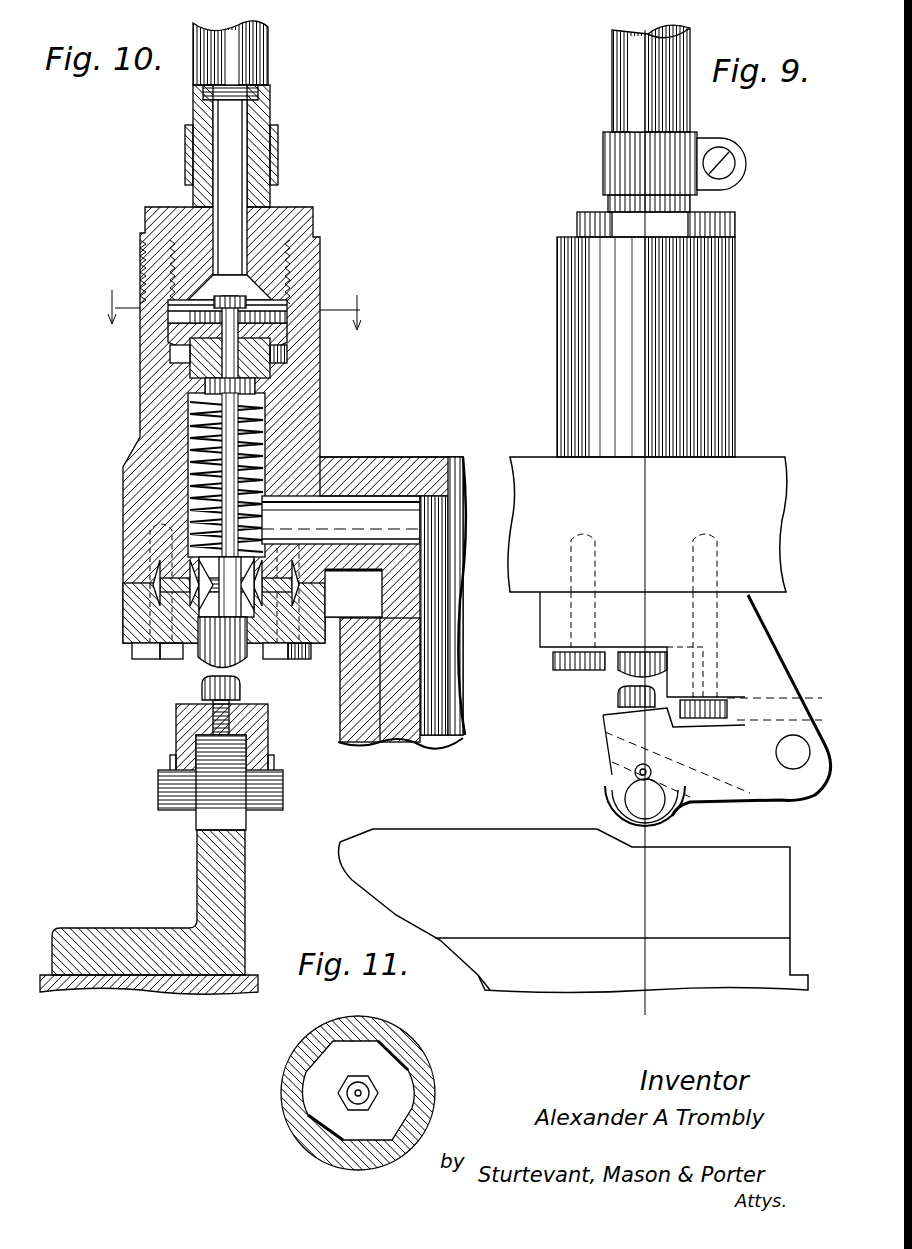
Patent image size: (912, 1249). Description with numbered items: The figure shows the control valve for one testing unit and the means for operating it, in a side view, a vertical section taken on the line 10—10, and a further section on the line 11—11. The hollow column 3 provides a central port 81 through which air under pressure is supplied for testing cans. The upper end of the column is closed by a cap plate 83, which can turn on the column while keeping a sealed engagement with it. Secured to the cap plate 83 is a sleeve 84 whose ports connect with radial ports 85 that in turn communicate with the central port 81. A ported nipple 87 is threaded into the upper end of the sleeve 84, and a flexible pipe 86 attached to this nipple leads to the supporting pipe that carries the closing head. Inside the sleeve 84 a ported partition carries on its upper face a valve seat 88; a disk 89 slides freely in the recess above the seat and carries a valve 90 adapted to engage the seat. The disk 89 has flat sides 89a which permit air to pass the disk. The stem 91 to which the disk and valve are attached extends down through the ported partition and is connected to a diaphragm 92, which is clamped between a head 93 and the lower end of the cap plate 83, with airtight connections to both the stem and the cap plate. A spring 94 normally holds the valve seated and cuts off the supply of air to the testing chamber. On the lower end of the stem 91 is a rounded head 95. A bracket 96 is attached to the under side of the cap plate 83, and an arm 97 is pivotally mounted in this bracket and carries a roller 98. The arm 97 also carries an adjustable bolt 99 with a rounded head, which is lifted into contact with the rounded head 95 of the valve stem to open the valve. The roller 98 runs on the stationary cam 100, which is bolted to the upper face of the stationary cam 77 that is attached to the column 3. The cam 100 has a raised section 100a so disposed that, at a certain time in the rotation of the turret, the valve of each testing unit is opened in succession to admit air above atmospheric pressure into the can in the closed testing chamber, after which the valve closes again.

In FIG. 10, the column 3 is at (440, 673).
In FIG. 9, the section line 10— 10 is at (648, 523).
In FIG. 10, the section line 11— 11 is at (238, 310).
In FIG. 10, the stationary cam 77 is at (145, 983).
In FIG. 9, the stationary cam 77 is at (713, 990).
In FIG. 10, the port 81 is at (458, 625).
In FIG. 10, the cap plate 83 is at (432, 470).
In FIG. 9, the cap plate 83 is at (760, 470).
In FIG. 10, the sleeve 84 is at (305, 270).
In FIG. 9, the sleeve 84 is at (712, 305).
In FIG. 11, the sleeve 84 is at (433, 1099).
In FIG. 10, the radial port 85 is at (330, 510).
In FIG. 10, the flexible pipe 86 is at (268, 58).
In FIG. 9, the flexible pipe 86 is at (610, 94).
In FIG. 10, the ported nipple 87 is at (250, 222).
In FIG. 9, the ported nipple 87 is at (712, 236).
In FIG. 10, the valve seat 88 is at (262, 393).
In FIG. 10, the disk 89 is at (178, 330).
In FIG. 11, the disk 89 is at (393, 1087).
In FIG. 11, the flat sides 89a is at (388, 1052).
In FIG. 10, the valve 90 is at (195, 358).
In FIG. 10, the stem 91 is at (228, 370).
In FIG. 11, the stem 91 is at (353, 1093).
In FIG. 10, the diaphragm 92 is at (125, 618).
In FIG. 10, the head 93 is at (130, 593).
In FIG. 10, the spring 94 is at (195, 468).
In FIG. 10, the rounded head 95 is at (212, 672).
In FIG. 9, the bracket 96 is at (747, 642).
In FIG. 10, the arm 97 is at (262, 755).
In FIG. 9, the arm 97 is at (676, 752).
In FIG. 10, the roller 98 is at (168, 823).
In FIG. 9, the roller 98 is at (607, 798).
In FIG. 10, the adjustable bolt 99 is at (205, 690).
In FIG. 9, the adjustable bolt 99 is at (617, 700).
In FIG. 10, the stationary cam 100 is at (215, 882).
In FIG. 9, the stationary cam 100 is at (565, 909).
In FIG. 9, the raised section 100a is at (453, 812).